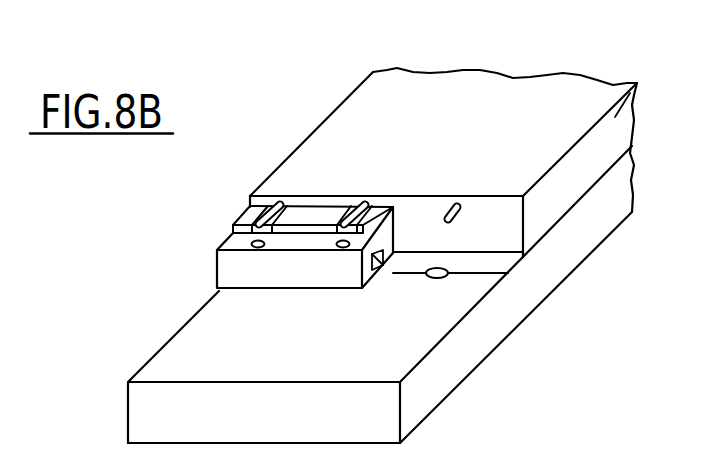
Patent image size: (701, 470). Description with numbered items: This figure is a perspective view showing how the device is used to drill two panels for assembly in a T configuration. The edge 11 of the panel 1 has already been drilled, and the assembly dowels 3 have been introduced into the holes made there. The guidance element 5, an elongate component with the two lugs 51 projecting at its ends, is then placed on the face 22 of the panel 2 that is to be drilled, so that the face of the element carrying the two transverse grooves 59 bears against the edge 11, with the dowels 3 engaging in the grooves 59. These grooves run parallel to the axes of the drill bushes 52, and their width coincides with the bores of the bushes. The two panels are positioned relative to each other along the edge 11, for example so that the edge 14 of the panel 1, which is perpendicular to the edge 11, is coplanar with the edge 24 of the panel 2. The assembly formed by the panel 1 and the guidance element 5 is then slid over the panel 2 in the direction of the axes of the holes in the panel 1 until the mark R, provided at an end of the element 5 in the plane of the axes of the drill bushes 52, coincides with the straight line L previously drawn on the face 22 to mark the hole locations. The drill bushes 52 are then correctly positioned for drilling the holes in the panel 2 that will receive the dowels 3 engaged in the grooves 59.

The panel 1 is at (447, 88).
The edge 11 is at (504, 242).
The edge 14 is at (637, 82).
The panel 2 is at (190, 335).
The face 22 is at (283, 366).
The edge 24 is at (463, 360).
The guidance element 5 is at (228, 266).
The transverse grooves 59 is at (243, 216).
The assembly dowels 3 is at (362, 199).
The drill bushes 52 is at (340, 251).
The lugs 51 is at (385, 265).
The mark R is at (372, 270).
The straight line L is at (450, 290).